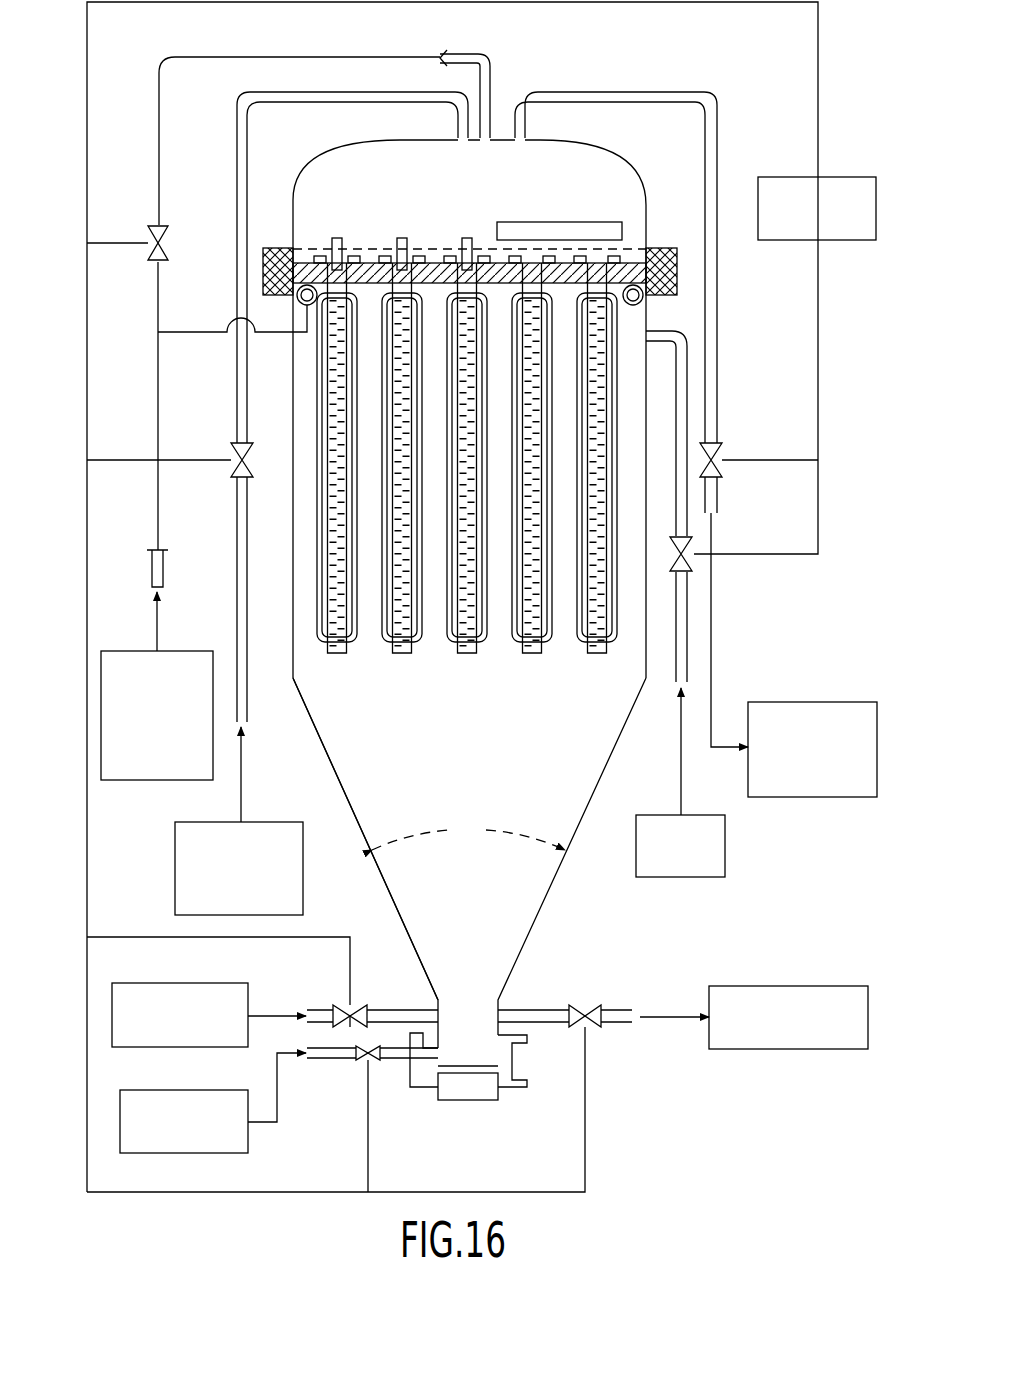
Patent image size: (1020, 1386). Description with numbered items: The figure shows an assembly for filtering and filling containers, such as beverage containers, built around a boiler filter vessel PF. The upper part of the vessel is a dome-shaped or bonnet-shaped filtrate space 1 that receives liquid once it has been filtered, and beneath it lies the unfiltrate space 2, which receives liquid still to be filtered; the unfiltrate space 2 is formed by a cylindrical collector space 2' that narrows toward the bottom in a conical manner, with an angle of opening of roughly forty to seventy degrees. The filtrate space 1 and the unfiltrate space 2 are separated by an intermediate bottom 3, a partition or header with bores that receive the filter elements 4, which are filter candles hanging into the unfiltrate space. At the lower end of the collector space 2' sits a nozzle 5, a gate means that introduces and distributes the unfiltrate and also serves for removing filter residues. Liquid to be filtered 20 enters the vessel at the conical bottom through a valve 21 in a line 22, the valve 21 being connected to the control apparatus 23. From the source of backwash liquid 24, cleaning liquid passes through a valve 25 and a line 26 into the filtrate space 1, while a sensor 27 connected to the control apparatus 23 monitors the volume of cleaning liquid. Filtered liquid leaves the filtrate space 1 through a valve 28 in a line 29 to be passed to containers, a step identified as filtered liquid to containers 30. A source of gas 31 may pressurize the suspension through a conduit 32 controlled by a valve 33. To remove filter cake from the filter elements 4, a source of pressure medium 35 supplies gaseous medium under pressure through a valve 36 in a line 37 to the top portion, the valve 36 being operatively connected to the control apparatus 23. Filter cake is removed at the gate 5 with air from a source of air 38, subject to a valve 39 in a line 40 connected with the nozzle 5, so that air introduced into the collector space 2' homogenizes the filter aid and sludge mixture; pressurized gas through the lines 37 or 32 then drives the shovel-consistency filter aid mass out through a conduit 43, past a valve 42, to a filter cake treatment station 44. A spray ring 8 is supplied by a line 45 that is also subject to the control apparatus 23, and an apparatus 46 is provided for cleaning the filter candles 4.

The vessel PF is at (68, 144).
The filtrate space 1 is at (634, 178).
The unfiltrate space 2 is at (519, 828).
The collector space 2' is at (360, 839).
The intermediate bottom 3 is at (677, 275).
The filter elements 4 is at (630, 398).
The nozzle 5 is at (520, 1062).
The spray ring 8 is at (648, 306).
The liquid to be filtered 20 is at (180, 983).
The valve 21 is at (358, 1005).
The line 22 is at (321, 1010).
The control apparatus 23 is at (794, 177).
The source of backwash liquid 24 is at (121, 651).
The valve 25 is at (169, 237).
The line 26 is at (347, 57).
The sensor 27 is at (622, 228).
The valve 28 is at (719, 447).
The line 29 is at (718, 504).
The step of passing filtered liquid to containers 30 is at (818, 702).
The source of gas 31 is at (725, 874).
The conduit 32 is at (673, 686).
The valve 33 is at (690, 563).
The source of pressure medium 35 is at (175, 896).
The valve 36 is at (232, 470).
The line 37 is at (235, 407).
The source of air 38 is at (248, 1148).
The valve 39 is at (361, 1062).
The line 40 is at (396, 1060).
The valve 42 is at (596, 1005).
The conduit 43 is at (614, 1025).
The filter cake treatment station 44 is at (792, 1049).
The line 45 is at (279, 334).
The apparatus for cleaning filter candles 46 is at (470, 238).